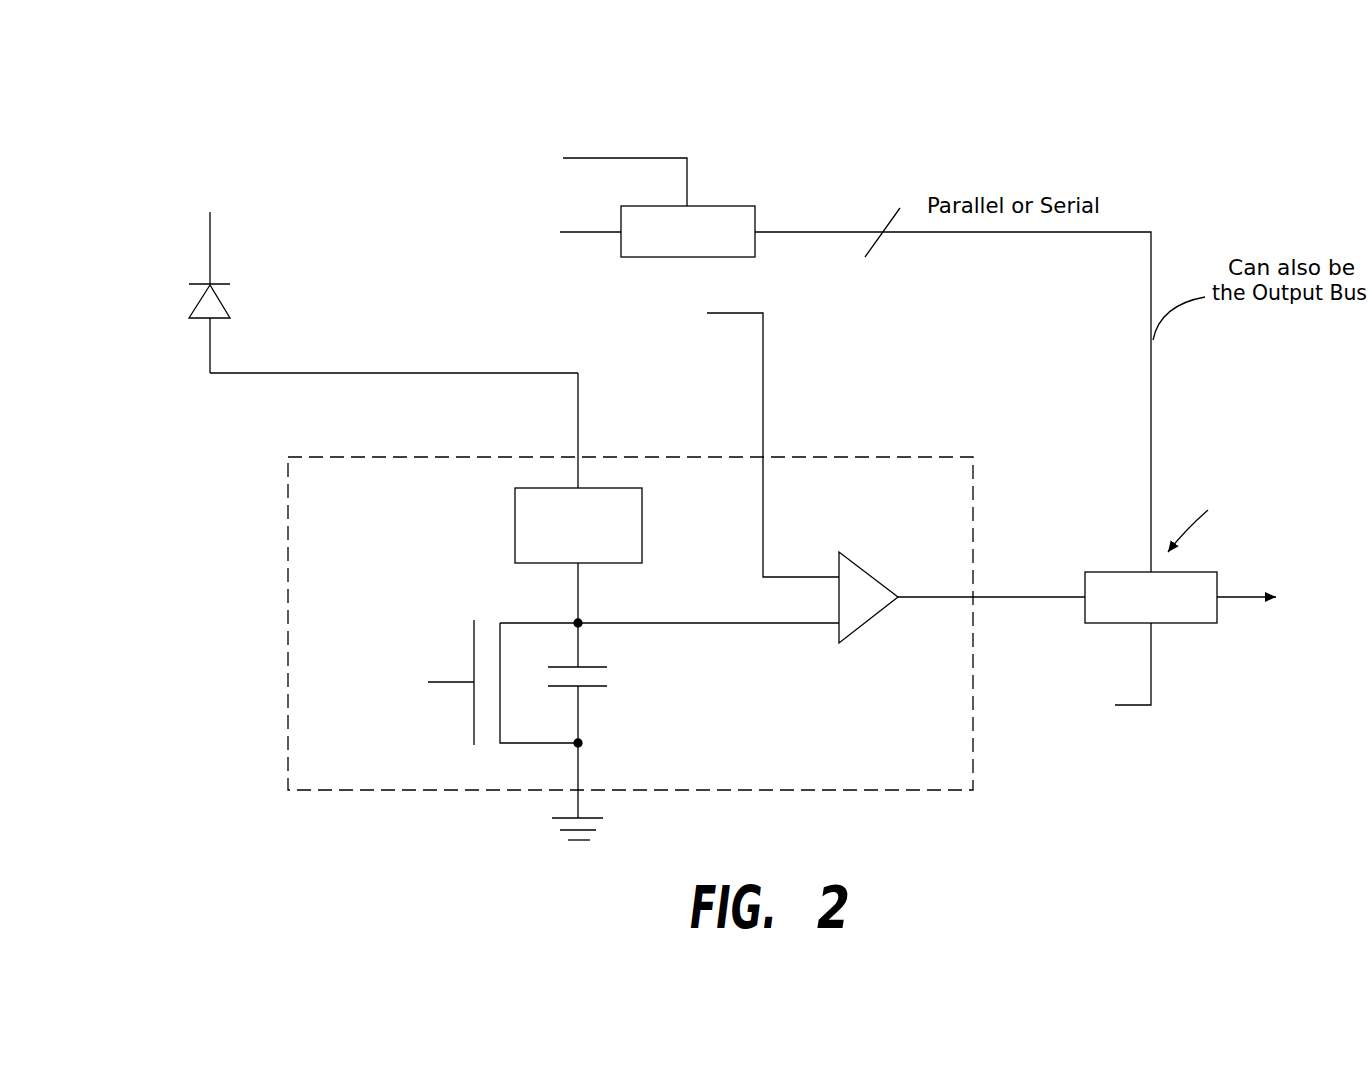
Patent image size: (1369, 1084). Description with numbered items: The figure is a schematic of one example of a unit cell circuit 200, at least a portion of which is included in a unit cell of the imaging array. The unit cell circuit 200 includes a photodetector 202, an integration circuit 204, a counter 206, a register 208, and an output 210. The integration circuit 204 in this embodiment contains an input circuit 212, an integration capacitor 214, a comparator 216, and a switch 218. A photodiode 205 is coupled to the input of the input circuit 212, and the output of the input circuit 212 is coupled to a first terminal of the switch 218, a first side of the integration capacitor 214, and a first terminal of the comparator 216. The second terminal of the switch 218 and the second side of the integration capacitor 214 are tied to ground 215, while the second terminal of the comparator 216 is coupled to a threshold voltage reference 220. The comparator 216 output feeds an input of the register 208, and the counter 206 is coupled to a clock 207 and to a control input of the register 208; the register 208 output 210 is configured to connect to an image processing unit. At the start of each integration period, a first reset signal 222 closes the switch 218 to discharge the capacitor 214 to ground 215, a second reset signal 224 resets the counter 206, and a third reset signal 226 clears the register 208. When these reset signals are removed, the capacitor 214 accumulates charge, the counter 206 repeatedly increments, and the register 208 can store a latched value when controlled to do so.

The unit cell circuit 200 is at (1232, 182).
The photodetector 202 is at (184, 272).
The integration circuit 204 is at (286, 512).
The photodiode 205 is at (227, 307).
The counter 206 is at (727, 205).
The clock 207 is at (533, 147).
The register 208 is at (1120, 572).
The output 210 is at (1245, 600).
The input circuit 212 is at (618, 564).
The integration capacitor 214 is at (590, 688).
The ground 215 is at (600, 820).
The comparator 216 is at (927, 535).
The switch 218 is at (473, 645).
The threshold voltage reference 220 is at (655, 325).
The first reset signal 222 is at (407, 690).
The second reset signal 224 is at (515, 240).
The third reset signal 226 is at (1080, 710).